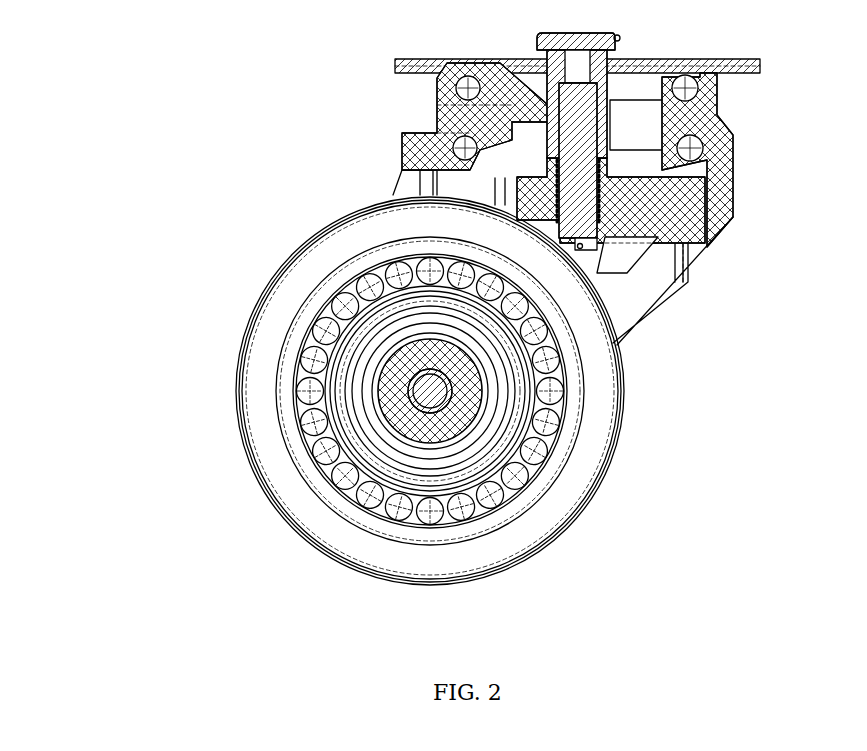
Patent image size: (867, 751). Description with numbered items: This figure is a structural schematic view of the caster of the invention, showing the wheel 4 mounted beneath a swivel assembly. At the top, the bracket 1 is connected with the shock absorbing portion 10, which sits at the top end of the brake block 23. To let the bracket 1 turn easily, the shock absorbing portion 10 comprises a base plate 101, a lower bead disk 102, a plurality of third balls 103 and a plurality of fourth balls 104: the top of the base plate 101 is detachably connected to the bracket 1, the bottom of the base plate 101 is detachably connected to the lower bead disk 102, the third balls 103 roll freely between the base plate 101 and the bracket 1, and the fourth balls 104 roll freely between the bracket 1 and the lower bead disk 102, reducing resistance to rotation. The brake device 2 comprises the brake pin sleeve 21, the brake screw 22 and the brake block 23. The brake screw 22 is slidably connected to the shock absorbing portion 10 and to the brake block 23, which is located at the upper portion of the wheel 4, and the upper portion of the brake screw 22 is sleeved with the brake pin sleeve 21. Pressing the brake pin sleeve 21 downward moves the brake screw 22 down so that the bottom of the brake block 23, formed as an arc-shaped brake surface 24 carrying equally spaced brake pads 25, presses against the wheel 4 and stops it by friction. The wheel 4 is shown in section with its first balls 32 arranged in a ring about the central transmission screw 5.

The bracket 1 is at (702, 132).
The brake device 2 is at (70, 10).
The wheel 4 is at (438, 530).
The transmission screw 5 is at (432, 398).
The shock absorbing portion 10 is at (70, 193).
The brake pin sleeve 21 is at (593, 62).
The brake screw 22 is at (575, 120).
The brake block 23 is at (637, 228).
The brake surface 24 is at (590, 250).
The brake pad 25 is at (577, 250).
The first ball 32 is at (547, 358).
The base plate 101 is at (408, 67).
The lower bead disk 102 is at (503, 135).
The third ball 103 is at (465, 91).
The fourth ball 104 is at (460, 157).